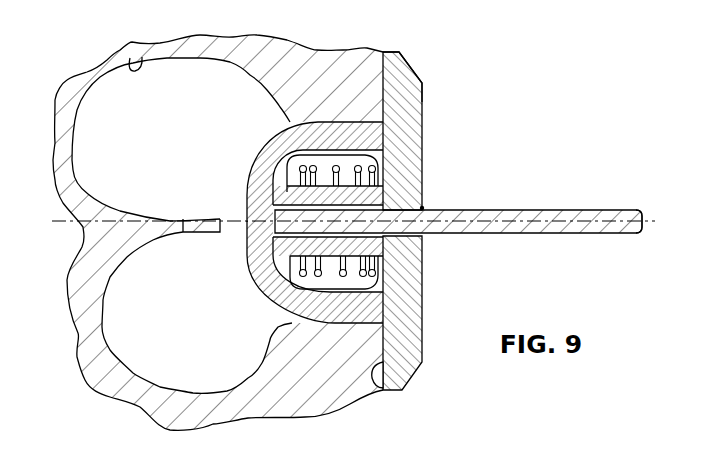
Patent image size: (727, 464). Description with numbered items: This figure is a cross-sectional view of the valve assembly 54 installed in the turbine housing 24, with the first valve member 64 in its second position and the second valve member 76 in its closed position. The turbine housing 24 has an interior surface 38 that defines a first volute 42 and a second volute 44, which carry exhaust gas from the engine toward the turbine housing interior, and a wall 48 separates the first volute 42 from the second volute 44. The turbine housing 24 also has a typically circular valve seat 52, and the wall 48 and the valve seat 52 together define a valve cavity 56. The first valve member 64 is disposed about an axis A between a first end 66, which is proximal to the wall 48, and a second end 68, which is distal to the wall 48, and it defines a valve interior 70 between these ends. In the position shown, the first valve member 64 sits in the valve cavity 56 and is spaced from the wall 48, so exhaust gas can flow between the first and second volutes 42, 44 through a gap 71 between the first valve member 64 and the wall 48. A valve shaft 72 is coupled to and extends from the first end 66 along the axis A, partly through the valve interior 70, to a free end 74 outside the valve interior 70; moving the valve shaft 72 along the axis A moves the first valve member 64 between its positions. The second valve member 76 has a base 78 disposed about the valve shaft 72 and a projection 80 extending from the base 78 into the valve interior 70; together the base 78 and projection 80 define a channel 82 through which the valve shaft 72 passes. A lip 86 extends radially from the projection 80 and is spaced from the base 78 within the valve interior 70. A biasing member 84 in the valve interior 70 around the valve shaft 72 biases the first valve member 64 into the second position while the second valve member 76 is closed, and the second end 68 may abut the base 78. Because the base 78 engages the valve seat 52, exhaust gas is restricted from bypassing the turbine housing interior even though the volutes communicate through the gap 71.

The turbine housing 24 is at (72, 87).
The interior surface 38 is at (139, 56).
The first volute 42 is at (92, 163).
The second volute 44 is at (125, 357).
The wall 48 is at (179, 233).
The valve seat 52 is at (376, 383).
The valve assembly 54 is at (467, 239).
The valve cavity 56 is at (264, 308).
The first valve member 64 is at (268, 152).
The first end 66 is at (244, 207).
The second end 68 is at (378, 152).
The valve interior 70 is at (330, 298).
The gap 71 is at (231, 229).
The valve shaft 72 is at (547, 234).
The free end 74 is at (639, 234).
The second valve member 76 is at (424, 102).
The base 78 is at (405, 127).
The projection 80 is at (357, 258).
The channel 82 is at (425, 206).
The biasing member 84 is at (335, 164).
The lip 86 is at (297, 146).
The axis A is at (68, 223).